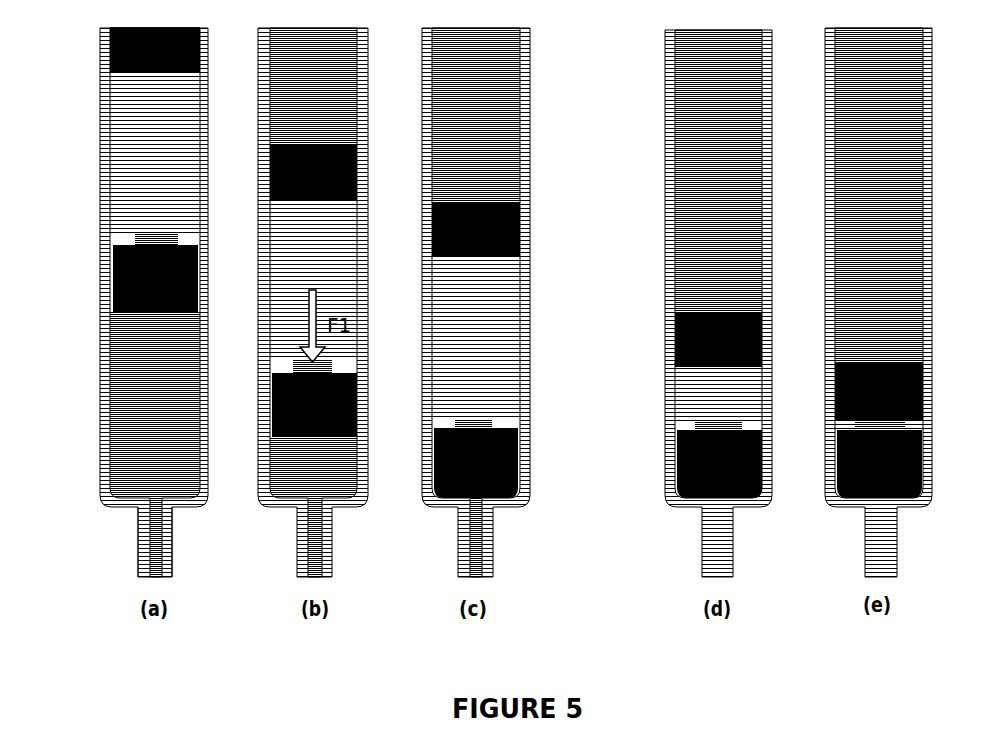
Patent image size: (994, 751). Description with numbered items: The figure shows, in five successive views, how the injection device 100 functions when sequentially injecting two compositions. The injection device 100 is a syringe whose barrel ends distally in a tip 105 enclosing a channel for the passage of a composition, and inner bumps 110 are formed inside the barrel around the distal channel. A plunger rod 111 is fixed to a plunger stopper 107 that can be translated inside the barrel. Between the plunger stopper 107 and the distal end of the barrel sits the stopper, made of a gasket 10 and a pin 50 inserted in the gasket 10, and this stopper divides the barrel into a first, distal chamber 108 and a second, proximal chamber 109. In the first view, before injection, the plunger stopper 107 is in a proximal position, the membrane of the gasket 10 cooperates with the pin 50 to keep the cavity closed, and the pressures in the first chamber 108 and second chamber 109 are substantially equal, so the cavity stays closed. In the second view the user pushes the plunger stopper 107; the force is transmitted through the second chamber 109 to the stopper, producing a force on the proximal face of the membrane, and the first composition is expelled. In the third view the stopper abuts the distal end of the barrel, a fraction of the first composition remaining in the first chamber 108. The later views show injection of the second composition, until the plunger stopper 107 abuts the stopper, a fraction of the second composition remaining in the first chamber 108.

The gasket 10 is at (125, 255).
The pin 50 is at (150, 303).
The injection device 100 is at (112, 294).
The tip 105 is at (150, 545).
The plunger stopper 107 is at (128, 33).
The first chamber 108 is at (143, 388).
The second chamber 109 is at (143, 165).
The inner bumps 110 is at (155, 50).
The plunger rod 111 is at (690, 218).